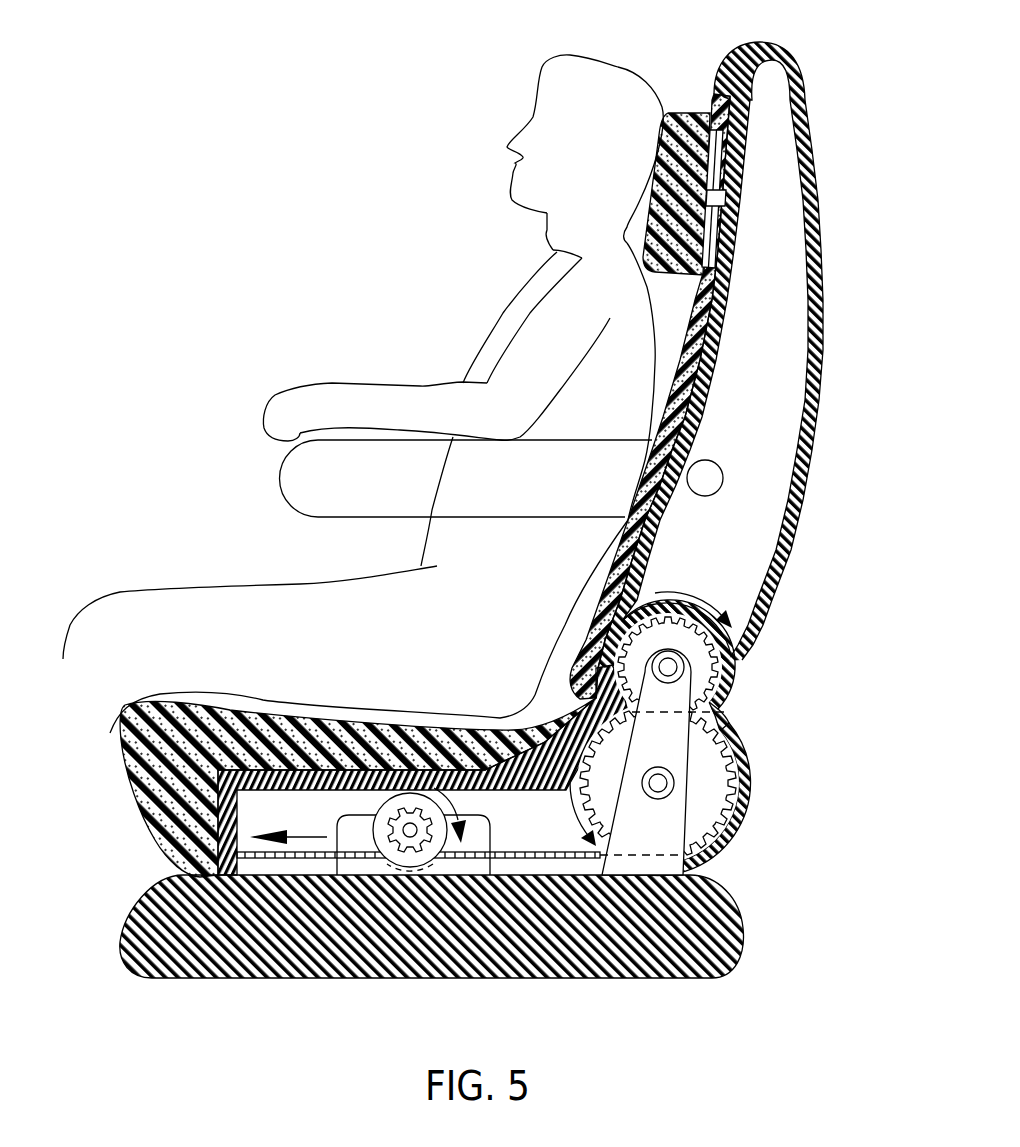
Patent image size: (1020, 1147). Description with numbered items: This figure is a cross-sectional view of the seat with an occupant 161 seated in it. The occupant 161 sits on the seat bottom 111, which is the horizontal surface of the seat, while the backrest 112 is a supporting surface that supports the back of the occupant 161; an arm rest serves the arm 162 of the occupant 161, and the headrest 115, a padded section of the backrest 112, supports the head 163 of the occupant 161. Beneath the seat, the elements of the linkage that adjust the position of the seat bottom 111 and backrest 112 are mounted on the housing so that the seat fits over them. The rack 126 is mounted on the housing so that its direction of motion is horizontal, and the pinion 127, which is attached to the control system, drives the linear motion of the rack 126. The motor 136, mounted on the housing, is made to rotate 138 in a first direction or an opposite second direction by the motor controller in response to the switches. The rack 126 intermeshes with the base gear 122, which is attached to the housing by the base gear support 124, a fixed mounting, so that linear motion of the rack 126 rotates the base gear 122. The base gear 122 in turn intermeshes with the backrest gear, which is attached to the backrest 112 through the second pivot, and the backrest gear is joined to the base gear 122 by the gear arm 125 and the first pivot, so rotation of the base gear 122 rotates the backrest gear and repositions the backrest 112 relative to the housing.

The seat bottom 111 is at (130, 758).
The backrest 112 is at (808, 126).
The headrest 115 is at (696, 108).
The base gear 122 is at (700, 780).
The base gear support 124 is at (658, 825).
The gear arm 125 is at (673, 693).
The rack 126 is at (376, 843).
The pinion 127 is at (290, 851).
The motor 136 is at (340, 818).
The rotate 138 is at (489, 877).
The occupant 161 is at (508, 295).
The arm 162 is at (332, 383).
The head 163 is at (612, 67).